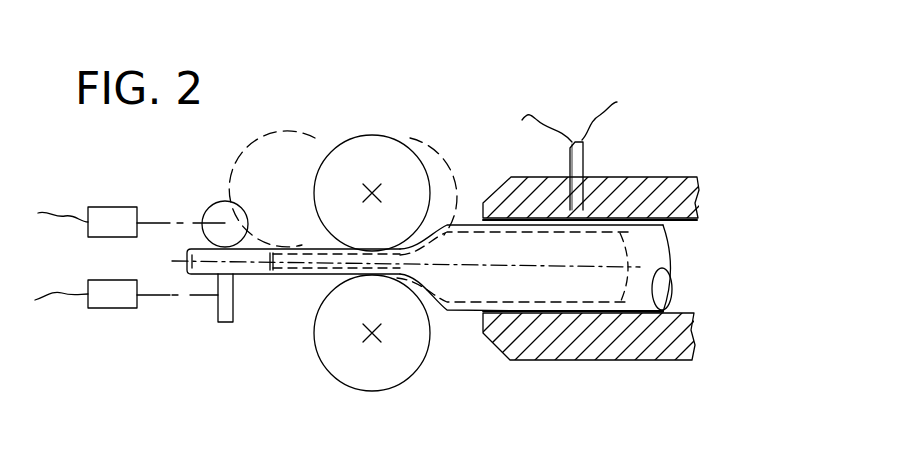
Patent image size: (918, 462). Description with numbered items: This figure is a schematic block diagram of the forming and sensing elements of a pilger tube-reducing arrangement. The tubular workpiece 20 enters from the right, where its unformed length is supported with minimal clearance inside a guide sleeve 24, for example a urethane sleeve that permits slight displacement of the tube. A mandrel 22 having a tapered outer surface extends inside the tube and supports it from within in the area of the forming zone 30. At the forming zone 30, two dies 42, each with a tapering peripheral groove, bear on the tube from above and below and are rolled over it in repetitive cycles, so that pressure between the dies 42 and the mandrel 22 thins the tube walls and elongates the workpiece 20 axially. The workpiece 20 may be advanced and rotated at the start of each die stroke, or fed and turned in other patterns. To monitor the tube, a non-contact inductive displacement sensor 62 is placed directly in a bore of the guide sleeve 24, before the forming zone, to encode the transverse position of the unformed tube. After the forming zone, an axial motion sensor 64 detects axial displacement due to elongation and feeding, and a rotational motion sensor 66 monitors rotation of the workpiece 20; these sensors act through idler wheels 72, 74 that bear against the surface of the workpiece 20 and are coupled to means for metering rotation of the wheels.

The workpiece 20 is at (458, 310).
The mandrel 22 is at (288, 276).
The guide sleeve 24 is at (560, 356).
The forming zone 30 is at (302, 310).
The dies 42 is at (368, 136).
The non-contact inductive displacement sensors 62 is at (576, 168).
The axial motion sensor 64 is at (130, 206).
The rotational motion sensor 66 is at (96, 309).
The idler wheel 72 is at (224, 210).
The idler wheel 74 is at (221, 320).